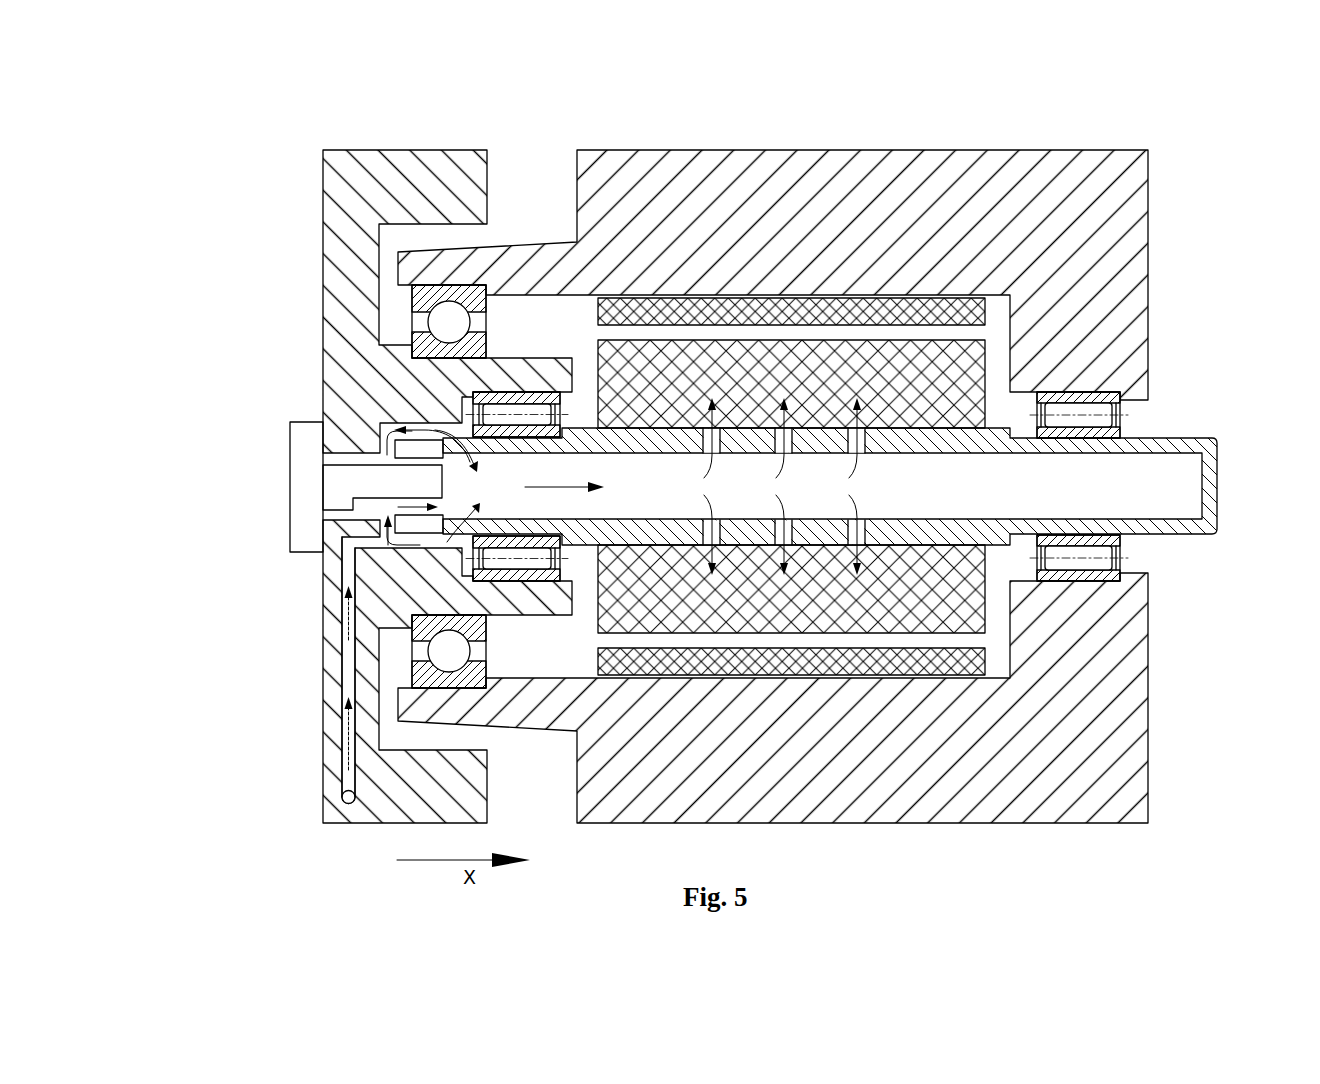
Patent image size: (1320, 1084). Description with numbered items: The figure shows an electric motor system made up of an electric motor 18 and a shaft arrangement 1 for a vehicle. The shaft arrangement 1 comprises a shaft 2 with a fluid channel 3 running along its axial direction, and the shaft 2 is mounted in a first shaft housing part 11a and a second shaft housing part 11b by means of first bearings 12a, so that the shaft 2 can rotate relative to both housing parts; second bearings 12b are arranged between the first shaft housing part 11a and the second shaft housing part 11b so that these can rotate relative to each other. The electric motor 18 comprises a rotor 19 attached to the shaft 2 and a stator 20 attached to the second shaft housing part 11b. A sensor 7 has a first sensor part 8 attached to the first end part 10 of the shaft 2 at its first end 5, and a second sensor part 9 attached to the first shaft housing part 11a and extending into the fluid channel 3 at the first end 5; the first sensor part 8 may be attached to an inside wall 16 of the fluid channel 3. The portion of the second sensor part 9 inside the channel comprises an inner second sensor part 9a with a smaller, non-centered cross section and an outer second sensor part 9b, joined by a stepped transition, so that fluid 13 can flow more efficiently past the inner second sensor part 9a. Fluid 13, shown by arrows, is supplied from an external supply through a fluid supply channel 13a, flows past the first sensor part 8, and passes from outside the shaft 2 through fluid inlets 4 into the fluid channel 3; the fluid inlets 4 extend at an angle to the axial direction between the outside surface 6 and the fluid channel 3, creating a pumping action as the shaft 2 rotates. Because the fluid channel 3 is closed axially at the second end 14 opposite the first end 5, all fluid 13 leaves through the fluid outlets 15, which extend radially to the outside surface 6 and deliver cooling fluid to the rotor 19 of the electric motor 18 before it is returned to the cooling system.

The shaft arrangement 1 is at (205, 119).
The electric motor 18 is at (185, 176).
The first shaft housing part 11a is at (323, 305).
The second shaft housing part 11b is at (1080, 268).
The first bearings 12a is at (520, 412).
The second bearings 12b is at (449, 321).
The shaft 2 is at (665, 470).
The fluid channel 3 is at (750, 490).
The fluid outlets 15 is at (857, 425).
The outside surface 6 is at (940, 345).
The stator 20 is at (985, 312).
The rotor 19 is at (985, 378).
The second end 14 is at (1218, 482).
The fluid inlets 4 is at (470, 432).
The first end 5 is at (400, 447).
The first sensor part 8 is at (408, 450).
The second sensor part 9 is at (400, 480).
The inner second sensor part 9a is at (400, 476).
The outer second sensor part 9b is at (410, 508).
The sensor 7 is at (200, 548).
The first end part 10 is at (405, 515).
The fluid 13 is at (348, 595).
The fluid supply channel 13a is at (348, 690).
The inside wall 16 is at (640, 540).